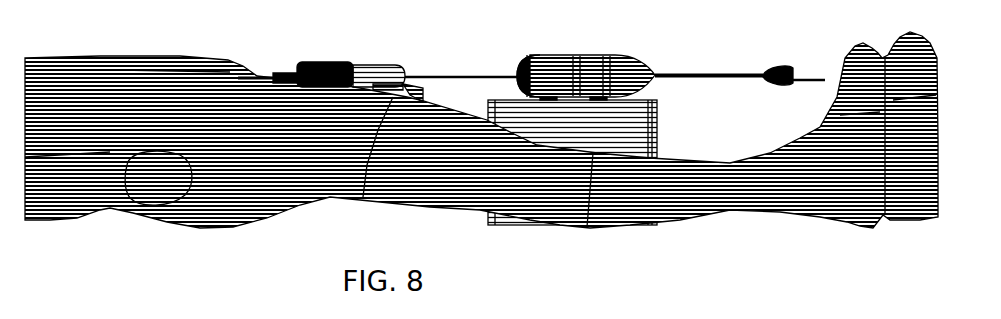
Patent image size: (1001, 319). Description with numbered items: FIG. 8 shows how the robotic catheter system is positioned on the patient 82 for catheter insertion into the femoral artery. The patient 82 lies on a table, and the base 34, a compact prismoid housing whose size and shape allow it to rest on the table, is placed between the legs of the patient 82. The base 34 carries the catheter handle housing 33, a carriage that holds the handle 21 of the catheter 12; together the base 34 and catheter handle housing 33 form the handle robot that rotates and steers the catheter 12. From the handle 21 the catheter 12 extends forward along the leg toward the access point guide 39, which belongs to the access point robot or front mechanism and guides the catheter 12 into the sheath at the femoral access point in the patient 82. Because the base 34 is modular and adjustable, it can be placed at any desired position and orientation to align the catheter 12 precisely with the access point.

The ICE catheter 12 is at (433, 75).
The handle 21 is at (520, 65).
The catheter handle housing 33 is at (630, 57).
The base 34 is at (572, 162).
The access point guide 39 is at (320, 62).
The patient 82 is at (481, 130).